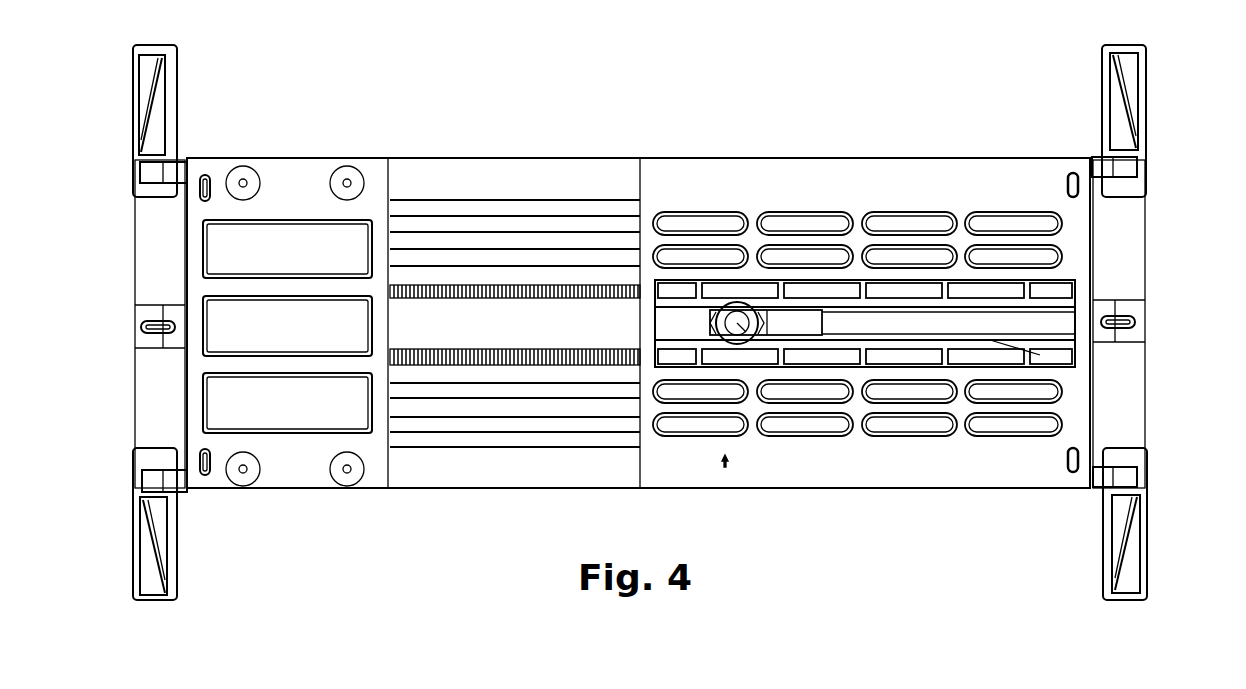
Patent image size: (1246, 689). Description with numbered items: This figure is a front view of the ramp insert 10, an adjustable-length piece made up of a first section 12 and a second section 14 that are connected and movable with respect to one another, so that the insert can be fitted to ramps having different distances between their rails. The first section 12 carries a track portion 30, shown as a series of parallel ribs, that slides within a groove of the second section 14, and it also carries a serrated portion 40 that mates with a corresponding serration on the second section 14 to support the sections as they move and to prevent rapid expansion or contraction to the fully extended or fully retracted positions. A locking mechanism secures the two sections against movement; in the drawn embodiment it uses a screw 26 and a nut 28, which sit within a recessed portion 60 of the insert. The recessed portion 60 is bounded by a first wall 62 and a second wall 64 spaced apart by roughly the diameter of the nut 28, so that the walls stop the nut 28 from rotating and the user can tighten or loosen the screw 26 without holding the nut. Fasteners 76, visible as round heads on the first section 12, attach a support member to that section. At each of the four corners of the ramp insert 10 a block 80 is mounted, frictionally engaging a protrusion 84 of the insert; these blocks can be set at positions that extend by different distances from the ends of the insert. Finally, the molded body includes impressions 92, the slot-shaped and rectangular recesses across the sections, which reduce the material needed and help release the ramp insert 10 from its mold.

The ramp insert 10 is at (972, 90).
The first section 12 is at (498, 158).
The second section 14 is at (903, 156).
The screw 26 is at (745, 336).
The nut 28 is at (733, 336).
The track portion 30 is at (525, 250).
The serrated portion 40 is at (455, 356).
The recessed portion 60 is at (1050, 320).
The first wall 62 is at (990, 340).
The second wall 64 is at (1000, 310).
The fasteners 76 is at (258, 183).
The blocks 80 is at (157, 105).
The protrusions 84 is at (150, 172).
The impressions 92 is at (790, 222).